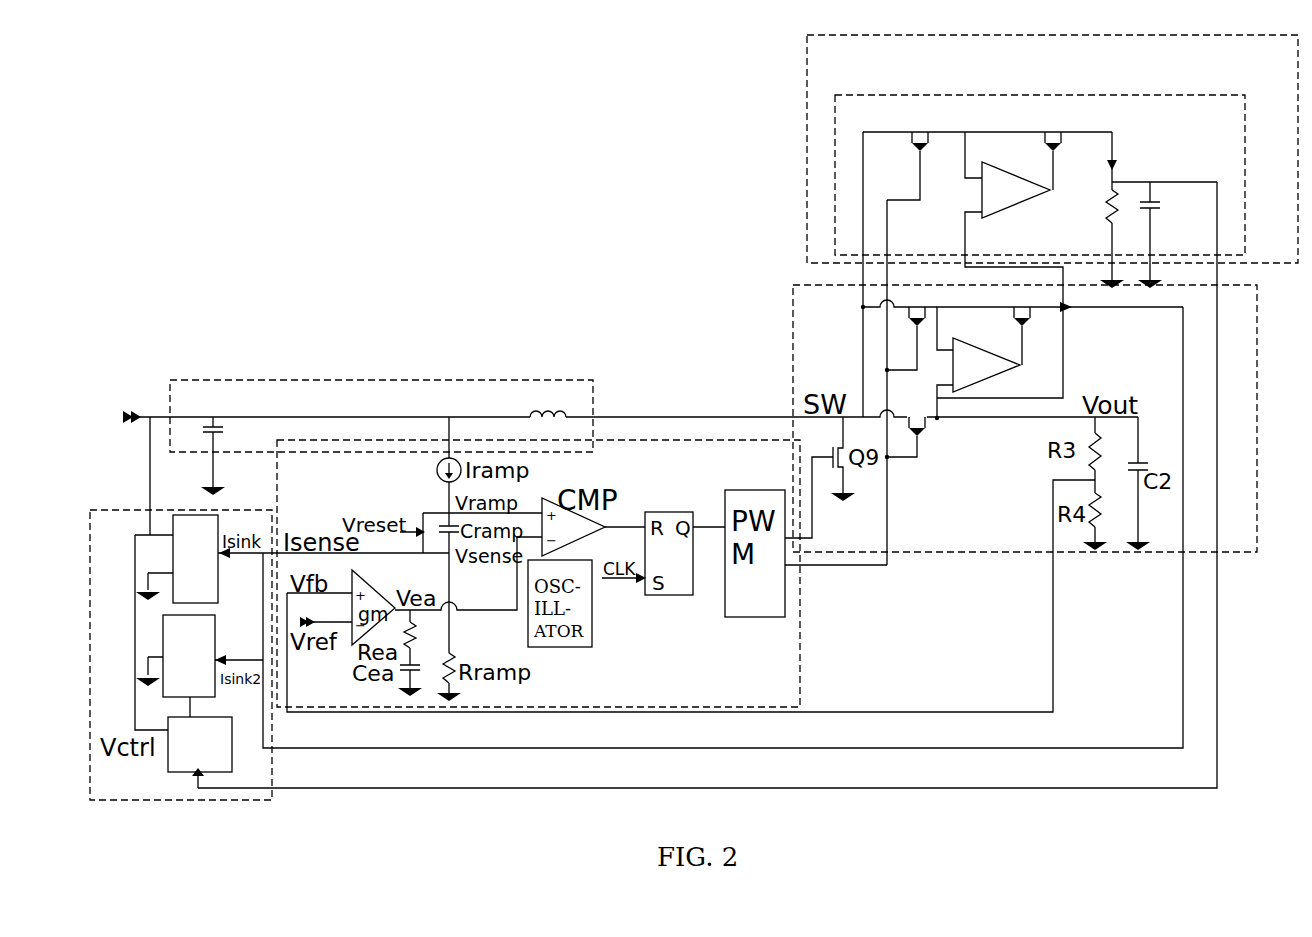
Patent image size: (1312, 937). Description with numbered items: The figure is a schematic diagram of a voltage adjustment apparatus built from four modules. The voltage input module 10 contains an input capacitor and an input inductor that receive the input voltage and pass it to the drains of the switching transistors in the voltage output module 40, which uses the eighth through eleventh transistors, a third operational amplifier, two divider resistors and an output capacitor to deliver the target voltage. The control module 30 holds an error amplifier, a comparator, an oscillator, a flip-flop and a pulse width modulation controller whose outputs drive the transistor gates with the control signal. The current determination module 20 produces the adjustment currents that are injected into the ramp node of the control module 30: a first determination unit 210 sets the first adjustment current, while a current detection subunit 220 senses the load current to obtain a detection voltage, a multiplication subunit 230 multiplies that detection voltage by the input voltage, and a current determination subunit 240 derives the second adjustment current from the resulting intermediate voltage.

The voltage input module 10 is at (366, 380).
The current determination module 20 is at (1153, 35).
The control module 30 is at (800, 650).
The voltage output module 40 is at (1260, 312).
The first determination unit 210 is at (222, 557).
The current detection subunit 220 is at (1192, 95).
The multiplication subunit 230 is at (213, 661).
The current determination subunit 240 is at (200, 717).